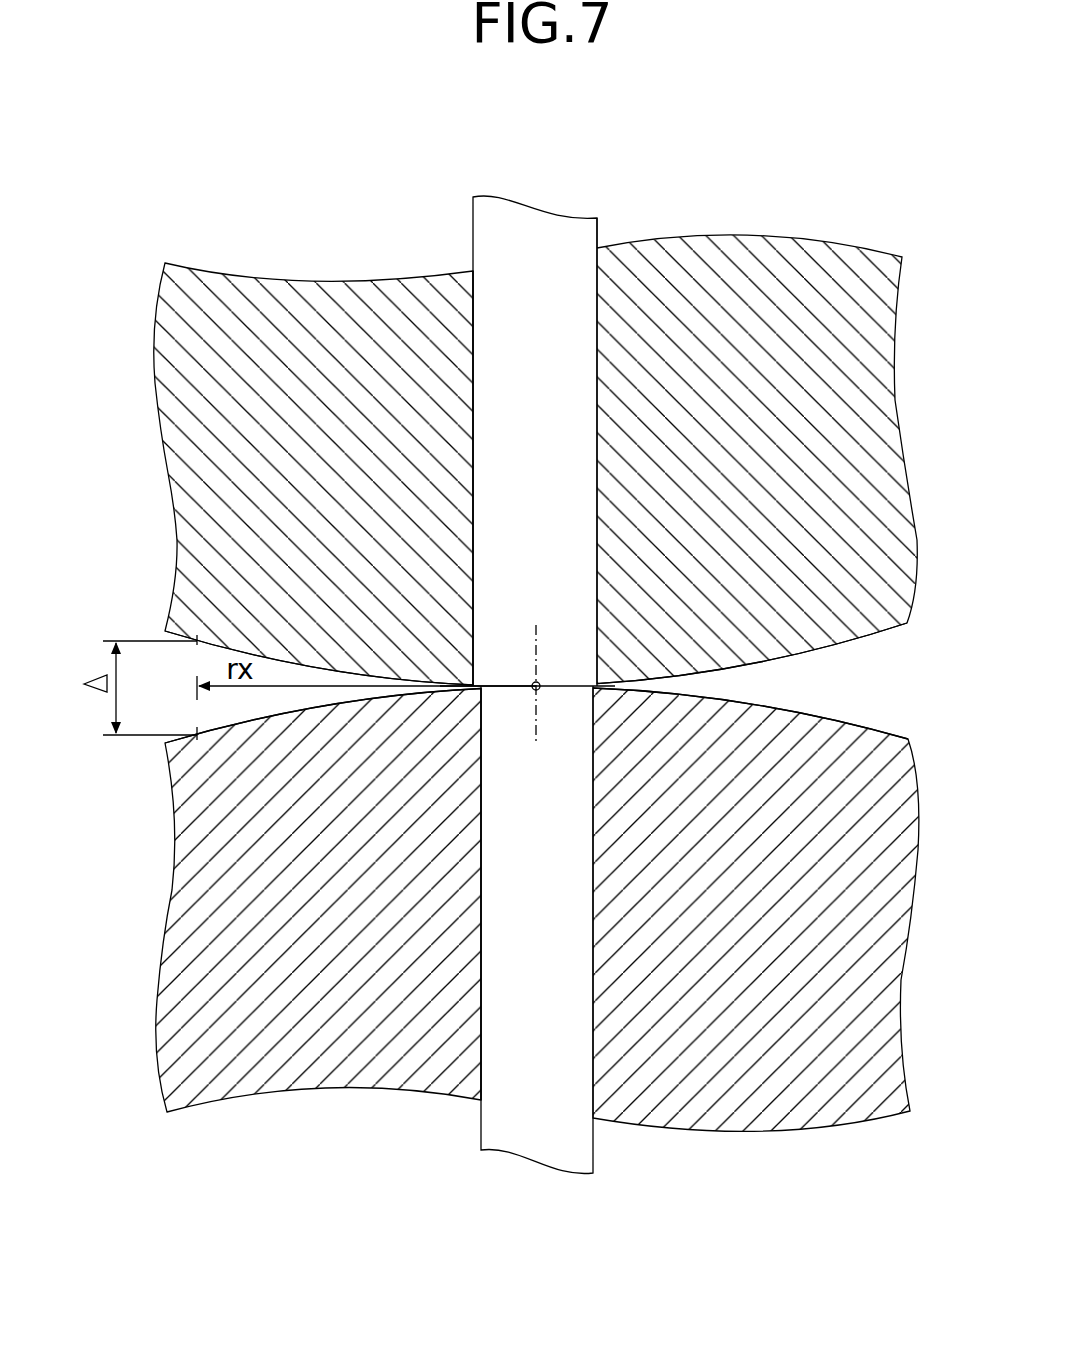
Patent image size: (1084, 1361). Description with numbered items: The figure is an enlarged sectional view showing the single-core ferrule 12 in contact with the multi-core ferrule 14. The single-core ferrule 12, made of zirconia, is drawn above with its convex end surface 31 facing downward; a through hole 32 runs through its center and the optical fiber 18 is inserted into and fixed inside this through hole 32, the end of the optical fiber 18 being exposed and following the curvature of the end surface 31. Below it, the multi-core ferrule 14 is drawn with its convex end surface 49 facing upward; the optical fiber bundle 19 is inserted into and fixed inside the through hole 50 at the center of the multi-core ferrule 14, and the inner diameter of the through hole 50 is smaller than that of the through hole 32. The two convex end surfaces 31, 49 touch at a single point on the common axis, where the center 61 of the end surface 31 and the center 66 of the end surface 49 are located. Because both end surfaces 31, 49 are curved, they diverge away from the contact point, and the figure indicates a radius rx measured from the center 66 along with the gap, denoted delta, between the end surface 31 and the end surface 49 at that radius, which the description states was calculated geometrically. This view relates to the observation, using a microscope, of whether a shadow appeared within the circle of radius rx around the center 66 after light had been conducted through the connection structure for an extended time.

The single-core ferrule 12 is at (722, 174).
The multi-core ferrule 14 is at (729, 1225).
The optical fiber 18 is at (540, 232).
The optical fiber bundle 19 is at (542, 1148).
The end surface 31 is at (835, 650).
The through hole 32 is at (478, 288).
The end surface 49 is at (835, 710).
The through hole 50 is at (483, 1043).
The center 61 is at (558, 706).
The center 66 is at (530, 672).